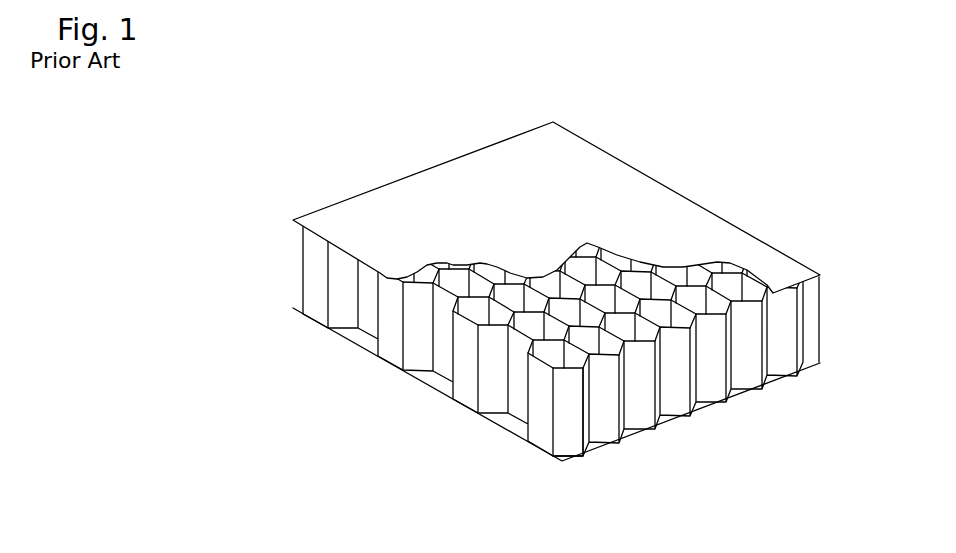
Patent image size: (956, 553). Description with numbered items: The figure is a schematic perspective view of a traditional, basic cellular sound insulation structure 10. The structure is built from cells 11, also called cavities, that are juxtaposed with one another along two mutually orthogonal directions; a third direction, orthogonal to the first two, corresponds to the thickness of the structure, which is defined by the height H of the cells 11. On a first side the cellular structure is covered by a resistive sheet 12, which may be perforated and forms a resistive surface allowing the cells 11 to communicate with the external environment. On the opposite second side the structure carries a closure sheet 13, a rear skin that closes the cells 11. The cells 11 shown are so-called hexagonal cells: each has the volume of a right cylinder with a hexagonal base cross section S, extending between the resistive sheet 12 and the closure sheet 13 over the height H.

The cellular sound insulation structure 10 is at (655, 112).
The cells 11 is at (571, 433).
The resistive sheet 12 is at (446, 177).
The closure sheet 13 is at (424, 383).
The height of the cells H is at (636, 430).
The hexagonal base cross section S is at (663, 350).